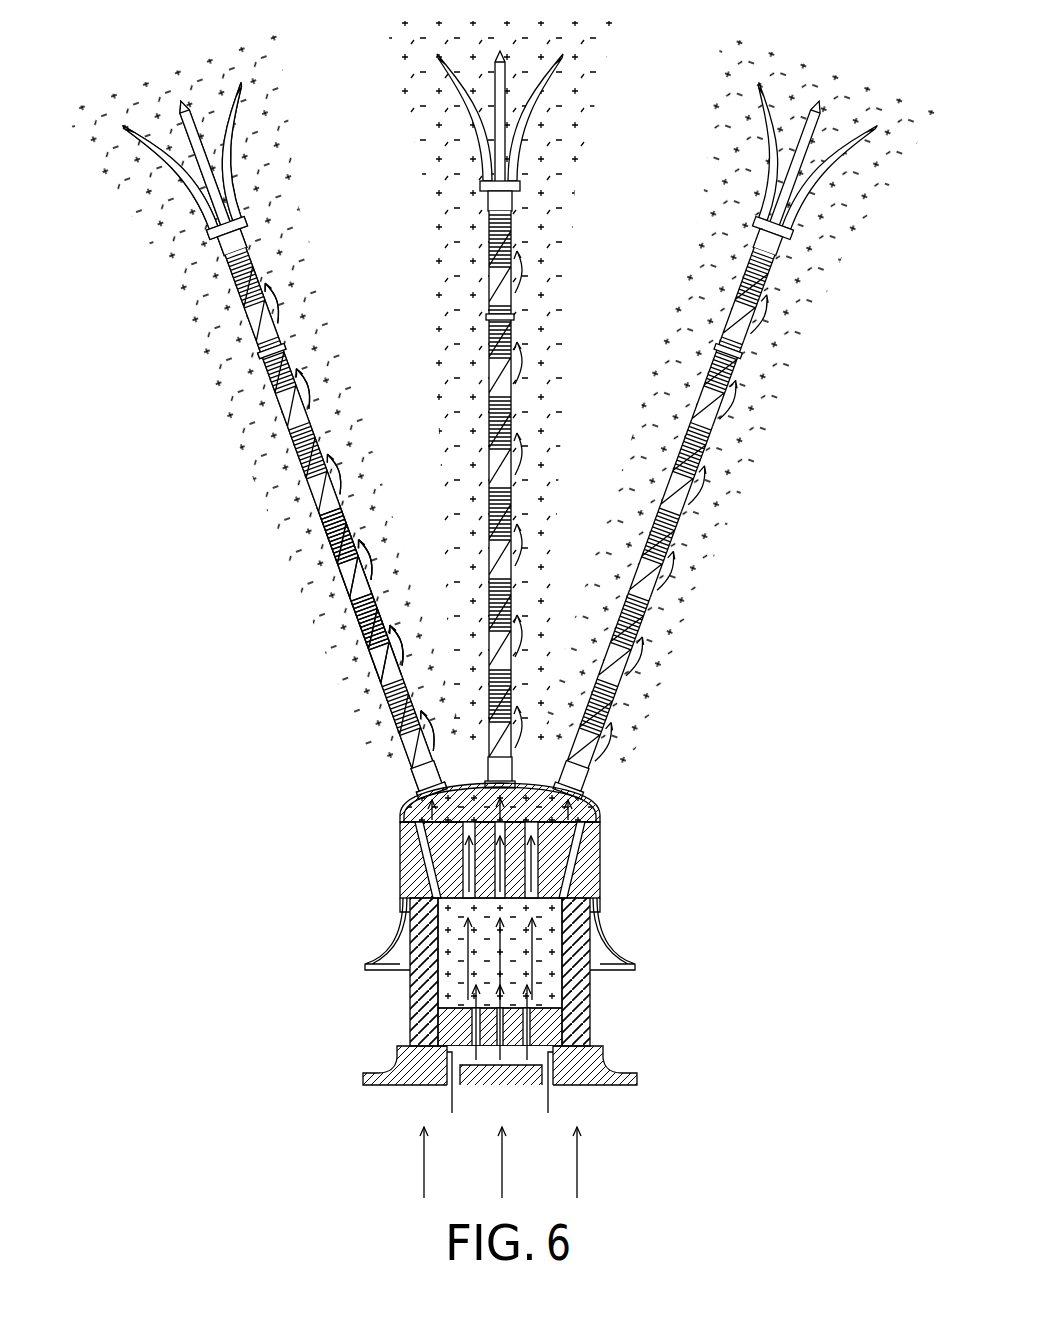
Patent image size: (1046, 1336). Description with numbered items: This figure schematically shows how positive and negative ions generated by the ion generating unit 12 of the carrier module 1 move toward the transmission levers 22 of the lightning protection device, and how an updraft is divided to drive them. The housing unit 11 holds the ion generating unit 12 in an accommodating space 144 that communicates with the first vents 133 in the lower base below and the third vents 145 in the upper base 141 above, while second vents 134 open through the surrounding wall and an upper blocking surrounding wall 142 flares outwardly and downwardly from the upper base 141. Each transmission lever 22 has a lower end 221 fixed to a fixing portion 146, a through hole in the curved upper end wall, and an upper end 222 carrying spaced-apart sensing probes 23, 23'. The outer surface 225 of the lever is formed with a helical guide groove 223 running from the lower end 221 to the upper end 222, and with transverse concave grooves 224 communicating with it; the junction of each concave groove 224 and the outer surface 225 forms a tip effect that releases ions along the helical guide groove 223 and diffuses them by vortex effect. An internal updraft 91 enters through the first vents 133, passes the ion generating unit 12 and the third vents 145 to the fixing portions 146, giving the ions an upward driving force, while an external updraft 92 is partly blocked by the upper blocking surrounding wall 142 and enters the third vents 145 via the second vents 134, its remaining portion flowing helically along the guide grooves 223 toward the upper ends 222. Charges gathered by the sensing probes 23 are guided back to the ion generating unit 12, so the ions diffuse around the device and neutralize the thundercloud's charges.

The carrier module 1 is at (448, 990).
The housing unit 11 is at (463, 915).
The ion generating unit 12 is at (440, 1030).
The transmission lever 22 is at (210, 705).
The sensing probe 23 is at (203, 112).
The sensing probe 23' is at (221, 129).
The internal updraft 91 is at (553, 1105).
The external updraft 92 is at (598, 745).
The first vents 133 is at (545, 1098).
The second vents 134 is at (408, 925).
The upper base 141 is at (408, 876).
The upper blocking surrounding wall 142 is at (620, 952).
The accommodating space 144 is at (585, 995).
The third vents 145 is at (568, 897).
The fixing portion 146 is at (425, 802).
The lower end 221 is at (418, 765).
The upper end 222 is at (222, 248).
The helical guide groove 223 is at (397, 688).
The concave groove 224 is at (367, 652).
The outer surface 225 is at (325, 560).